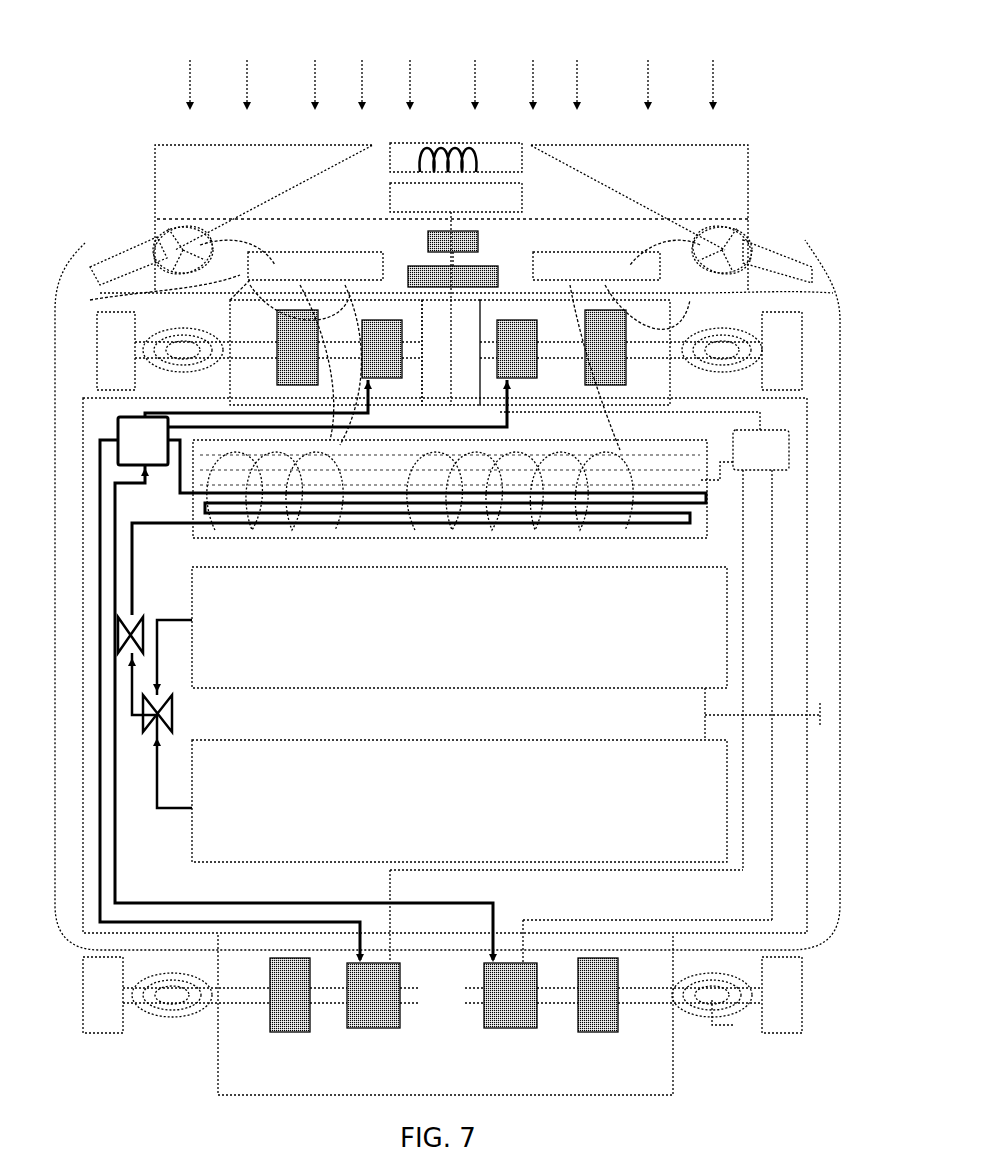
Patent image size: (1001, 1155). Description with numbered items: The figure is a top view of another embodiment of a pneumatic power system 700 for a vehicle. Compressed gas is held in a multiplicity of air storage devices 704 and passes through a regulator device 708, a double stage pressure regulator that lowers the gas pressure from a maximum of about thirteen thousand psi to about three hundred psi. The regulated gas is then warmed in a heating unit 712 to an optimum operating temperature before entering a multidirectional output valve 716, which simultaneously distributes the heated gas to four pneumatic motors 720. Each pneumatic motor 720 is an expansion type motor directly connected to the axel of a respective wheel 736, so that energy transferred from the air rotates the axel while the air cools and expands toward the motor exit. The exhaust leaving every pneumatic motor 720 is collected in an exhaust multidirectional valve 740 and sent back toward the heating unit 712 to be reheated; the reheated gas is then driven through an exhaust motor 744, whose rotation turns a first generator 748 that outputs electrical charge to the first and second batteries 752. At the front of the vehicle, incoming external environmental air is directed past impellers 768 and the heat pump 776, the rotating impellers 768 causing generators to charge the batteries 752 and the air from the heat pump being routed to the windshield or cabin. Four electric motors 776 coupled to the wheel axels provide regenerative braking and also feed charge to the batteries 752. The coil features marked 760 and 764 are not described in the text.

The pneumatic power system 700 is at (66, 90).
The air storage device 704 is at (437, 795).
The regulator device 708 is at (160, 713).
The heating unit 712 is at (200, 530).
The multidirectional output valve 716 is at (138, 440).
The pneumatic motor 720 is at (382, 342).
The wheel 736 is at (110, 337).
The exhaust multidirectional valve 740 is at (764, 452).
The exhaust motor 744 is at (455, 278).
The first generator 748 is at (448, 240).
The battery 752 is at (305, 267).
The condenser coil 760 is at (348, 450).
The evaporator coil 764 is at (613, 462).
The impeller 768 is at (183, 250).
The electric motor 776 is at (405, 157).